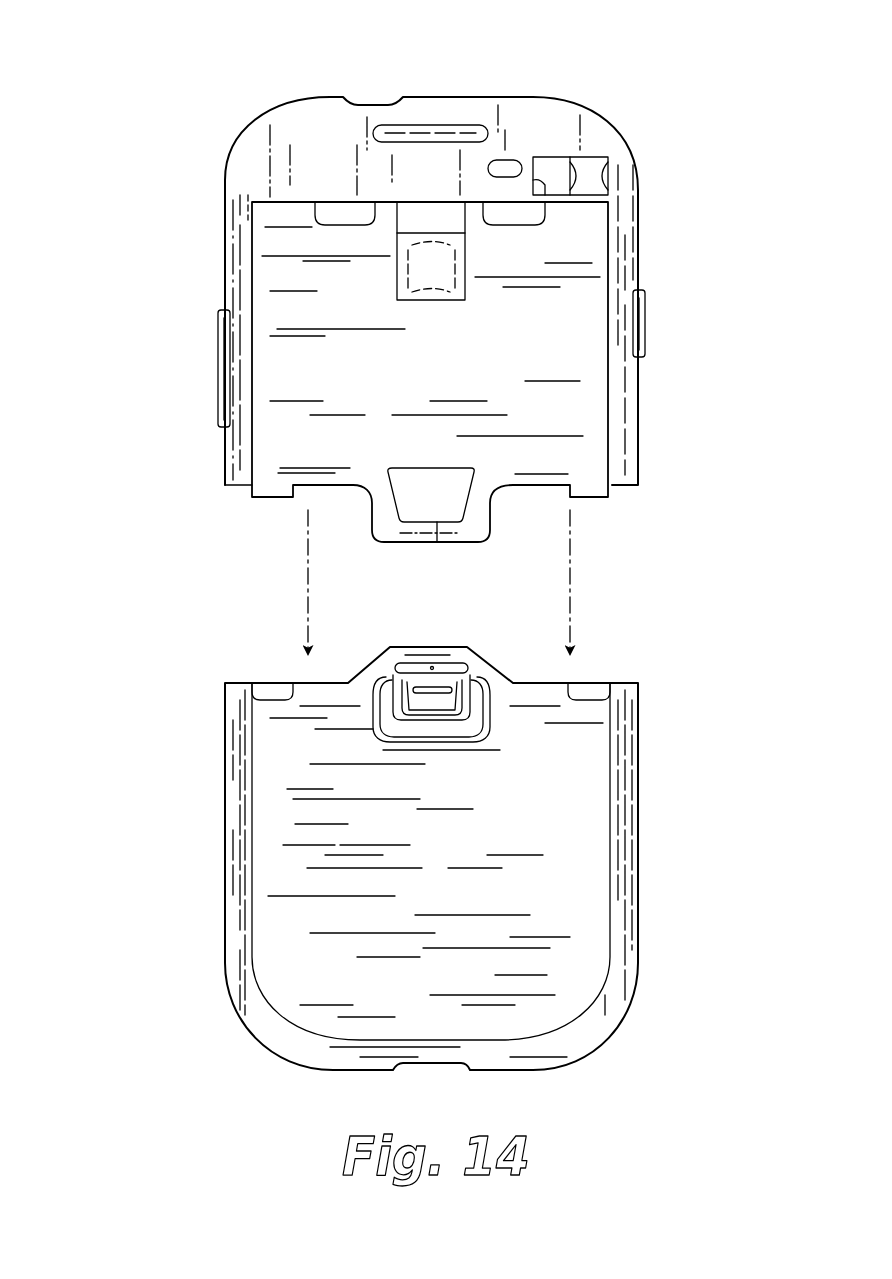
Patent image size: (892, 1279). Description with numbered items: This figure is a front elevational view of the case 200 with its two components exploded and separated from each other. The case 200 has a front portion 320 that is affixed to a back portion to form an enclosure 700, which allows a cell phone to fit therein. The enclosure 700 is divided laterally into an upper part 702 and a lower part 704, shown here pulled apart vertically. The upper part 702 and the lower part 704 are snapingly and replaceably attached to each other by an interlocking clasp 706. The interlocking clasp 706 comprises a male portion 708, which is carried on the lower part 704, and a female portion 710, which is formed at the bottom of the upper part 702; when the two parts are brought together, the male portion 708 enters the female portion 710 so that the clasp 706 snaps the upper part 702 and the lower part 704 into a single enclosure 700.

The case 200 is at (102, 246).
The front portion 320 is at (310, 150).
The enclosure 700 is at (224, 170).
The upper part 702 is at (644, 216).
The lower part 704 is at (644, 824).
The interlocking clasp 706 is at (497, 510).
The male portion 708 is at (373, 677).
The female portion 710 is at (437, 545).